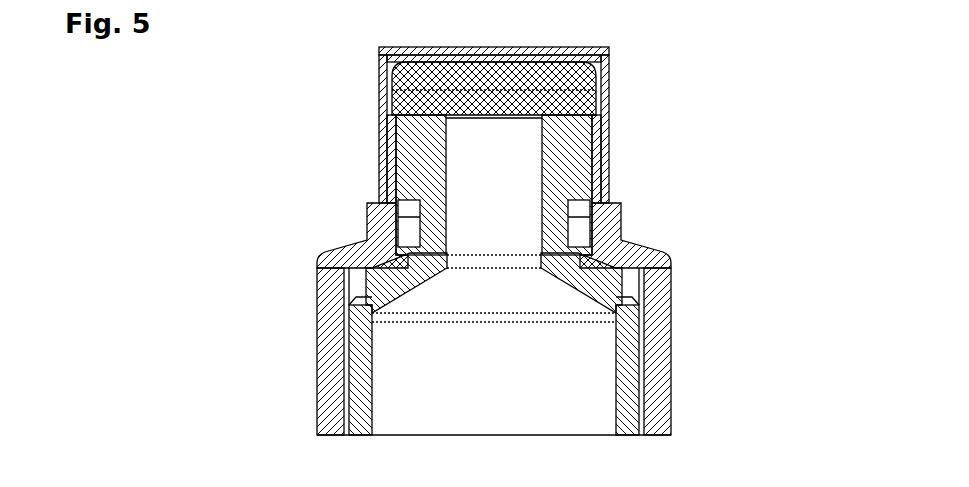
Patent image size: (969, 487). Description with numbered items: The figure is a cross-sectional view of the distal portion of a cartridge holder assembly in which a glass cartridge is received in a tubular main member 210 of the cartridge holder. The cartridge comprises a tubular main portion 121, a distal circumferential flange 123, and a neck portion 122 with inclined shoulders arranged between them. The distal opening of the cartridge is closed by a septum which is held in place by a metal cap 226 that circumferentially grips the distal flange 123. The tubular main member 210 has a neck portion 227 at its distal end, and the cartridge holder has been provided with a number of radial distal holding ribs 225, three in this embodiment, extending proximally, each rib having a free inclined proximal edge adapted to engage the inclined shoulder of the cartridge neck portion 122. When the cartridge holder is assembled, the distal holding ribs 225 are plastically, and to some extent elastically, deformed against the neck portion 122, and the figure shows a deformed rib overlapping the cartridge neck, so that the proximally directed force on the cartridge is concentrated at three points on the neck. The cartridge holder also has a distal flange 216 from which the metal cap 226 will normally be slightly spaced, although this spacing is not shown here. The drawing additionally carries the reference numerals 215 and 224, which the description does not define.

The tubular main portion 121 is at (630, 352).
The neck portion 122 is at (595, 270).
The circumferential flange 123 is at (573, 158).
The tubular main member 210 is at (660, 402).
The closure cap shell 215 is at (610, 124).
The cartridge holder distal flange 216 is at (577, 67).
The sealing element 224 is at (410, 85).
The distal holding ribs 225 is at (353, 298).
The metal cap 226 is at (388, 135).
The neck portion 227 is at (342, 245).